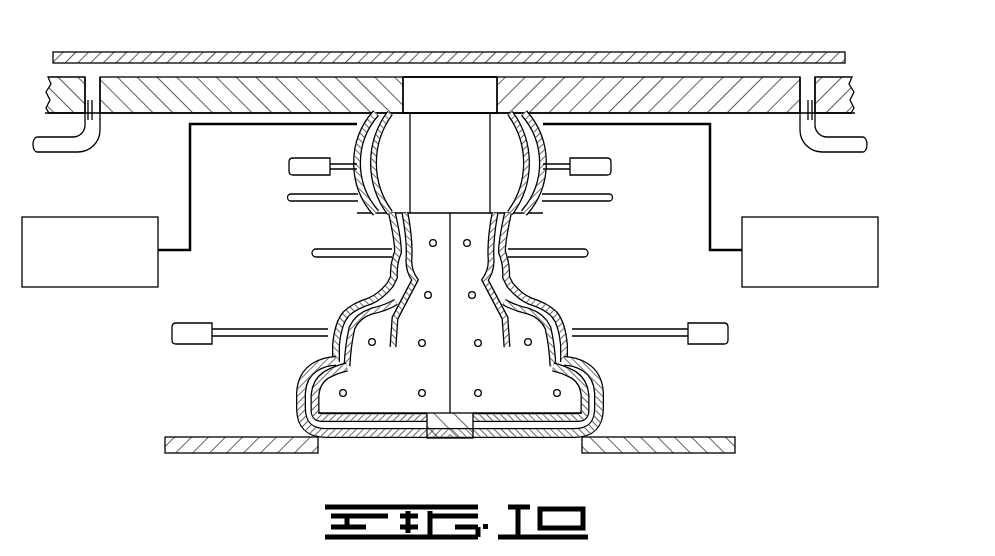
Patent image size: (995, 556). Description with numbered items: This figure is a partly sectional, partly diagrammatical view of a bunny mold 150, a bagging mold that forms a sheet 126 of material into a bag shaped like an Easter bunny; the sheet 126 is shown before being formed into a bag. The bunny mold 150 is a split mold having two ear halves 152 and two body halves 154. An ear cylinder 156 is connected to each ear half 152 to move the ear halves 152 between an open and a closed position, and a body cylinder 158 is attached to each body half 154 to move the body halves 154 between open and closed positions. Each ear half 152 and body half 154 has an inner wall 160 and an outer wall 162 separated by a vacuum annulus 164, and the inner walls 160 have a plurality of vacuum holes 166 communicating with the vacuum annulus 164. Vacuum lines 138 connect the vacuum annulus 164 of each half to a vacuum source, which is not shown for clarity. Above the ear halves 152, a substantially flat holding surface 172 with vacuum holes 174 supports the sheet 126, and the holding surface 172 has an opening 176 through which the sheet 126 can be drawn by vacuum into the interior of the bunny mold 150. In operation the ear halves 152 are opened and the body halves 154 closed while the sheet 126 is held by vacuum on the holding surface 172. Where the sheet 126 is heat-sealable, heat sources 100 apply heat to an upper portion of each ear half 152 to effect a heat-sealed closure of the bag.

The heat source 100 is at (88, 217).
The sheet 126 is at (530, 51).
The vacuum line 138 is at (79, 153).
The bunny mold 150 is at (382, 304).
The ear half 152 is at (353, 212).
The body half 154 is at (300, 378).
The ear cylinder 156 is at (292, 160).
The body cylinder 158 is at (180, 323).
The inner wall 160 is at (521, 292).
The outer wall 162 is at (360, 139).
The vacuum annulus 164 is at (545, 306).
The vacuum hole 166 is at (393, 421).
The holding surface 172 is at (322, 77).
The vacuum hole 174 is at (93, 80).
The opening 176 is at (455, 90).